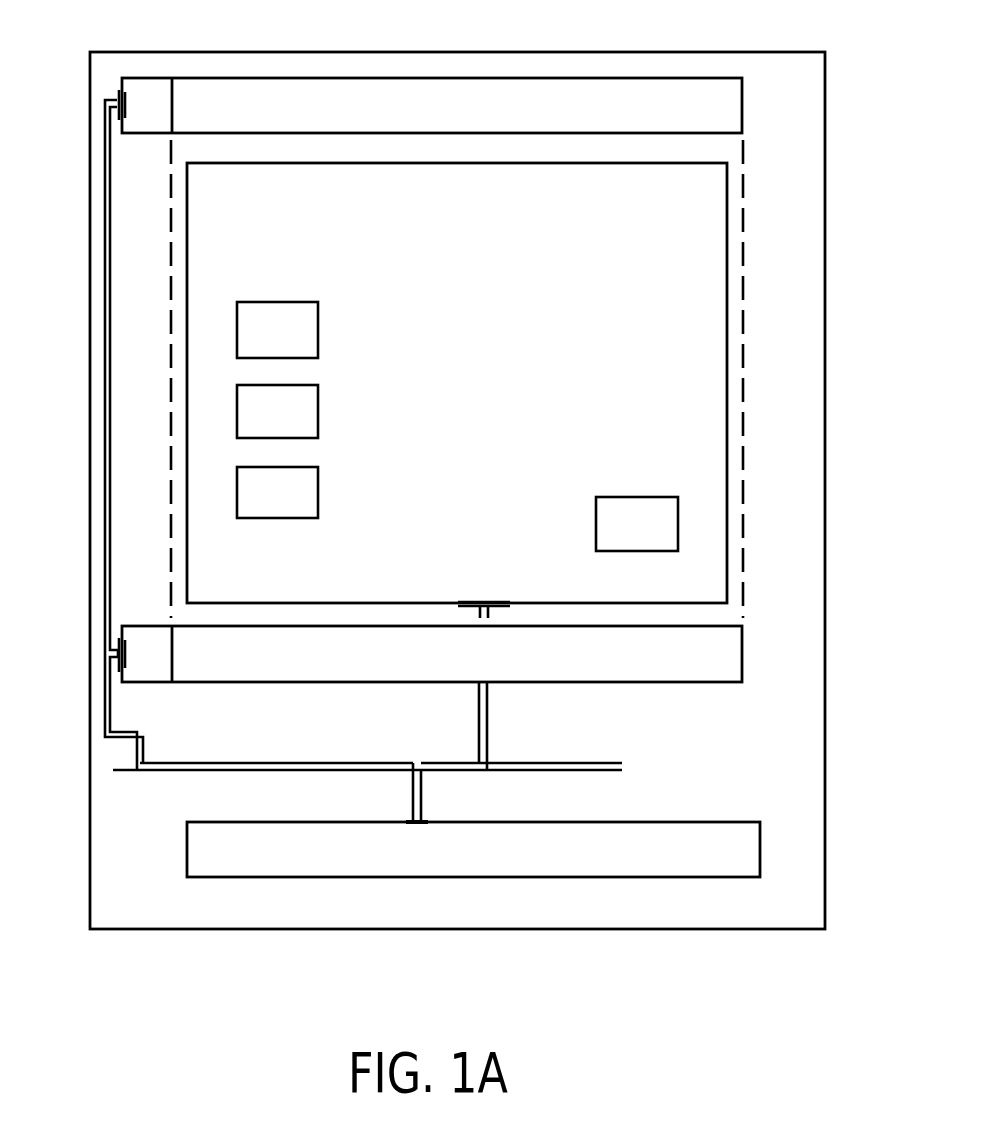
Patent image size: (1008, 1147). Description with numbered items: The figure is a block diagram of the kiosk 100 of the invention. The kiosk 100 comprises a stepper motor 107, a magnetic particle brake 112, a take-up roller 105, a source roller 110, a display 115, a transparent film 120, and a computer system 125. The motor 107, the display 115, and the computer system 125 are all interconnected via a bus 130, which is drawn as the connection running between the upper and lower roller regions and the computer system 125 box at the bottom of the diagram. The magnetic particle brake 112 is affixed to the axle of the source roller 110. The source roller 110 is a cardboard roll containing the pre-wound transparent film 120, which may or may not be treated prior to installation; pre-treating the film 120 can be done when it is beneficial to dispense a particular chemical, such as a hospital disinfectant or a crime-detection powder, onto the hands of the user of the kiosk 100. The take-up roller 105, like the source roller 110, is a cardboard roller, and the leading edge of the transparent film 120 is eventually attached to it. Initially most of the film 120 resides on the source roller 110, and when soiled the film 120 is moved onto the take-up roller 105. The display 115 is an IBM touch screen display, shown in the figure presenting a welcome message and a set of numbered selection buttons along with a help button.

The kiosk 100 is at (350, 52).
The take-up roller 105 is at (450, 103).
The stepper motor 107 is at (145, 98).
The source roller 110 is at (620, 683).
The magnetic particle brake 112 is at (145, 662).
The display 115 is at (727, 308).
The transparent film 120 is at (727, 474).
The computer system 125 is at (667, 822).
The bus 130 is at (268, 763).